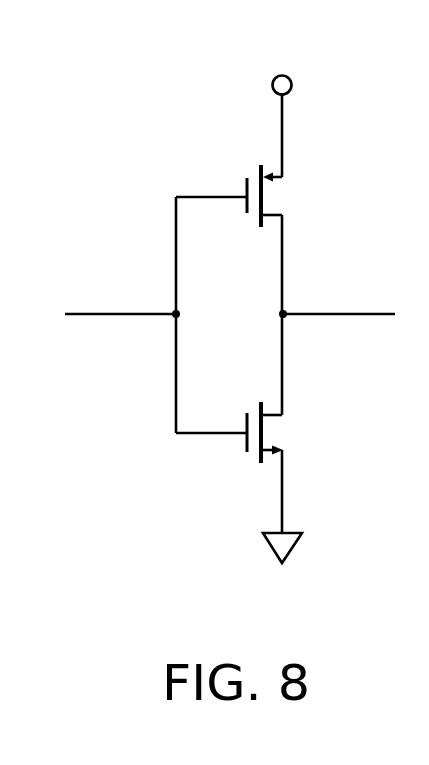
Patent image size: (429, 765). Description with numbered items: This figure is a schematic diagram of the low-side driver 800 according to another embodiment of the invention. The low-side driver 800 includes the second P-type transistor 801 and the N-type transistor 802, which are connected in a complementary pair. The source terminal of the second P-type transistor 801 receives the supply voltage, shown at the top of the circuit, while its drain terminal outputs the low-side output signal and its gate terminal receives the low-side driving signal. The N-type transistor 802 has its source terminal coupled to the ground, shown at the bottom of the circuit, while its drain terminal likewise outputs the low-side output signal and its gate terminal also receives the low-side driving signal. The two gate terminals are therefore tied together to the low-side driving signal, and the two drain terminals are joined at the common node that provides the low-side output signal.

The low-side driver 800 is at (230, 308).
The second P-type transistor 801 is at (275, 194).
The N-type transistor 802 is at (275, 434).